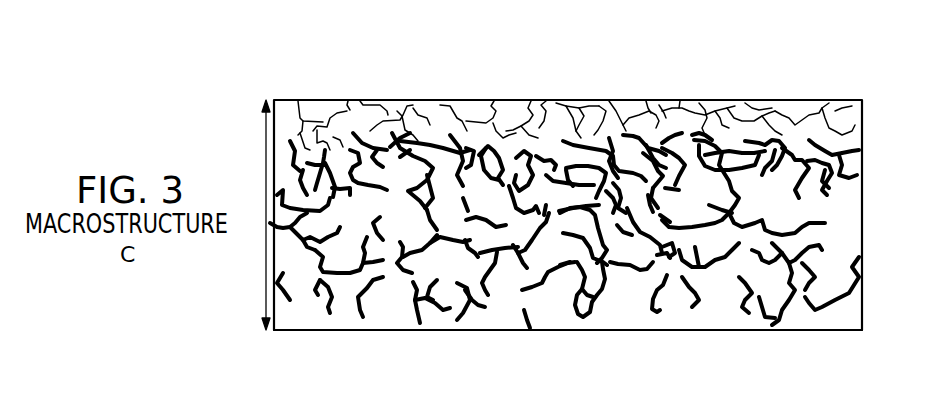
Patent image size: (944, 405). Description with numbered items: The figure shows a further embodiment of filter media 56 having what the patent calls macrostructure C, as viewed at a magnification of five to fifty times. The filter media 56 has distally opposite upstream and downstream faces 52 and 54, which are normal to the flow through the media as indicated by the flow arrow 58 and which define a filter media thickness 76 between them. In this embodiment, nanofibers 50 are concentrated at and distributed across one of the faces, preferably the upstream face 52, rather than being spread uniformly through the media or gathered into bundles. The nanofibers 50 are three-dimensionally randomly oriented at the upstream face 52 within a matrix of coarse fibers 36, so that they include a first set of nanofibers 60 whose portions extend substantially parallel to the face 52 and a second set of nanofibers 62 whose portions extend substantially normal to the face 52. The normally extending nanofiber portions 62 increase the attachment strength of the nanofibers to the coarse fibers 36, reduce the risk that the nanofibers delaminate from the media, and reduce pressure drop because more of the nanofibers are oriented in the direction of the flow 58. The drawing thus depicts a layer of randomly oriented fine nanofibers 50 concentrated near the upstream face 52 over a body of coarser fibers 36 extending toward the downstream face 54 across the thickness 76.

The coarse fibers 36 is at (502, 179).
The nanofibers 50 is at (479, 99).
The upstream face 52 is at (768, 100).
The downstream face 54 is at (768, 331).
The filter media 56 is at (335, 98).
The flow arrow 58 is at (508, 98).
The first set of nanofibers 60 is at (677, 102).
The second set of nanofibers 62 is at (640, 103).
The filter media thickness 76 is at (262, 150).